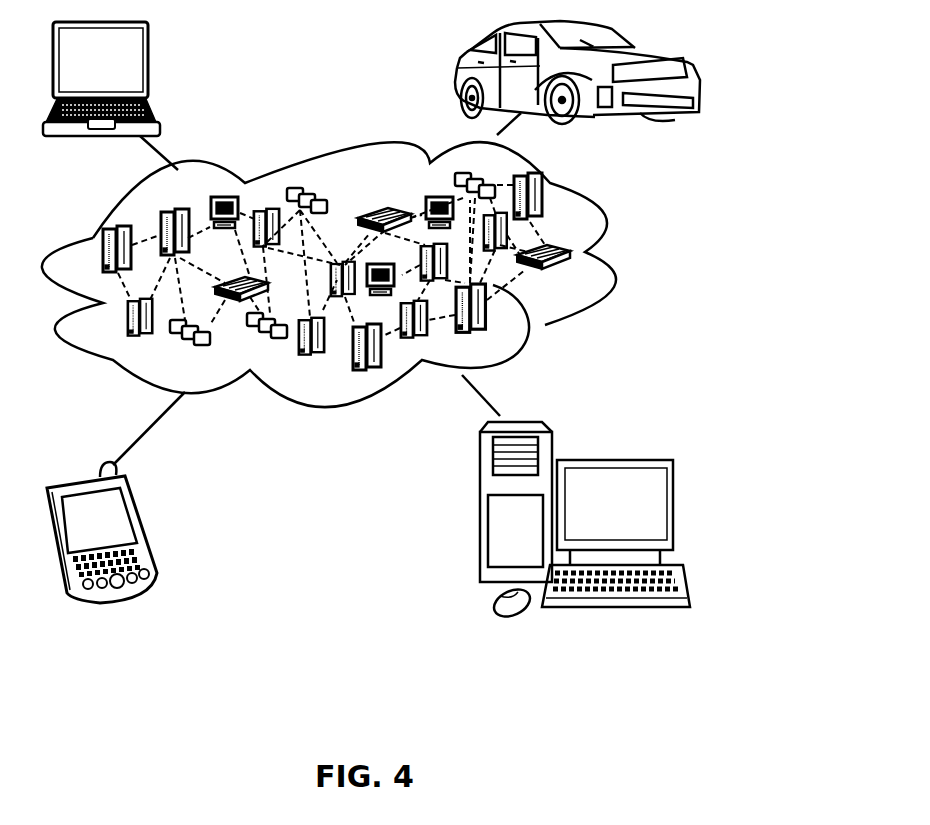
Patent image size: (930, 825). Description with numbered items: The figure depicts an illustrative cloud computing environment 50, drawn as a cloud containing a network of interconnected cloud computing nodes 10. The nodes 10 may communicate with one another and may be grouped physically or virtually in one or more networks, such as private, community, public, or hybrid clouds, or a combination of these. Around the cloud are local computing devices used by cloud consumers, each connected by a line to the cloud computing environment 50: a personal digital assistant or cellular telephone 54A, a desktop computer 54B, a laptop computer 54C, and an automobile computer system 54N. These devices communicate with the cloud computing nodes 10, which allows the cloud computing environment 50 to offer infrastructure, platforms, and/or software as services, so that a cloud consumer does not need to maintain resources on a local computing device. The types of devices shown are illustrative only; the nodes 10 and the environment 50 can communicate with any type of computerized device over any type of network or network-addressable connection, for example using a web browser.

The cloud computing node 10 is at (578, 281).
The cloud computing environment 50 is at (612, 253).
The personal digital assistant or cellular telephone 54A is at (147, 526).
The desktop computer 54B is at (613, 460).
The laptop computer 54C is at (150, 61).
The automobile computer system 54N is at (457, 75).